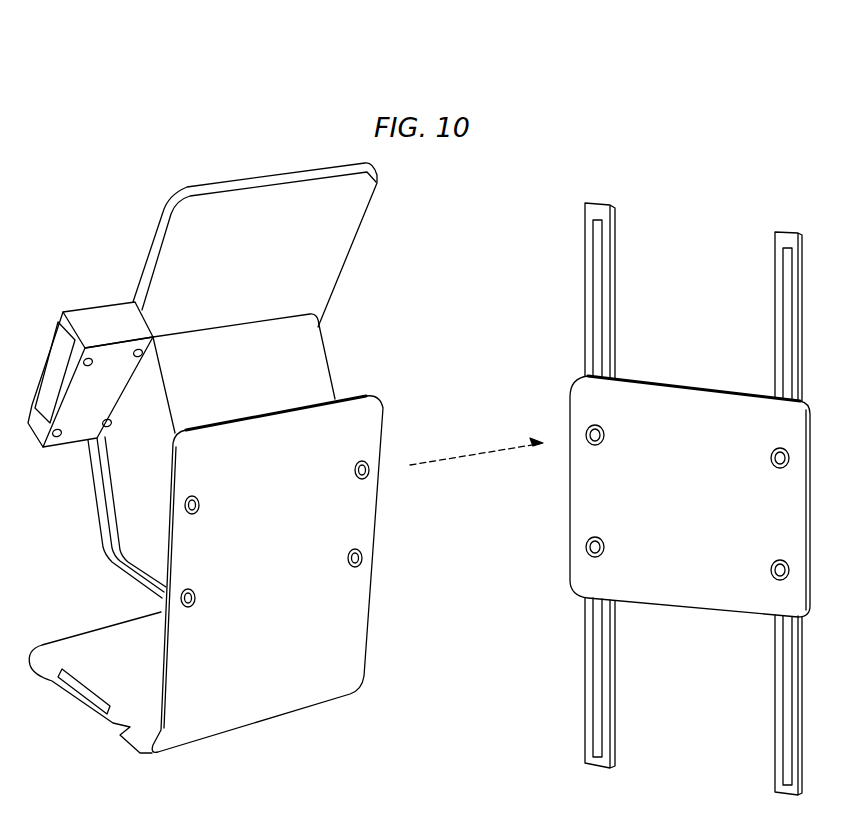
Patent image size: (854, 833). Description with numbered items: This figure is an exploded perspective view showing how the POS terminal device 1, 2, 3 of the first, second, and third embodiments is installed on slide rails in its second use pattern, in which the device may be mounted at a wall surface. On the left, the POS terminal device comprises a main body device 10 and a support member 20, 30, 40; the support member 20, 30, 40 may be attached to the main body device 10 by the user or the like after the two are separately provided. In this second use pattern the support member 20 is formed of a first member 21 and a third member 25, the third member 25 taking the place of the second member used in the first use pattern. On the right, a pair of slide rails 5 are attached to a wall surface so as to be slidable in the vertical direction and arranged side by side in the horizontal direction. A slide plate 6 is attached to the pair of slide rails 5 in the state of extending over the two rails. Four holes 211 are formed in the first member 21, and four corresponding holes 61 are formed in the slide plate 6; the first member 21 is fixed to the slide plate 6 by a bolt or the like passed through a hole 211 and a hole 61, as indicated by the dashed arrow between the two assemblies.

The main body device 10 is at (410, 264).
The POS terminal device 1 is at (339, 356).
The POS terminal device 2 is at (339, 356).
The POS terminal device 3 is at (410, 369).
The support member 20 is at (291, 527).
The support member 30 is at (291, 527).
The support member 40 is at (291, 527).
The first member 21 is at (373, 416).
The hole 211 is at (199, 509).
The third member 25 is at (85, 643).
The slide rail 5 is at (598, 212).
The slide plate 6 is at (668, 393).
The hole 61 is at (587, 432).